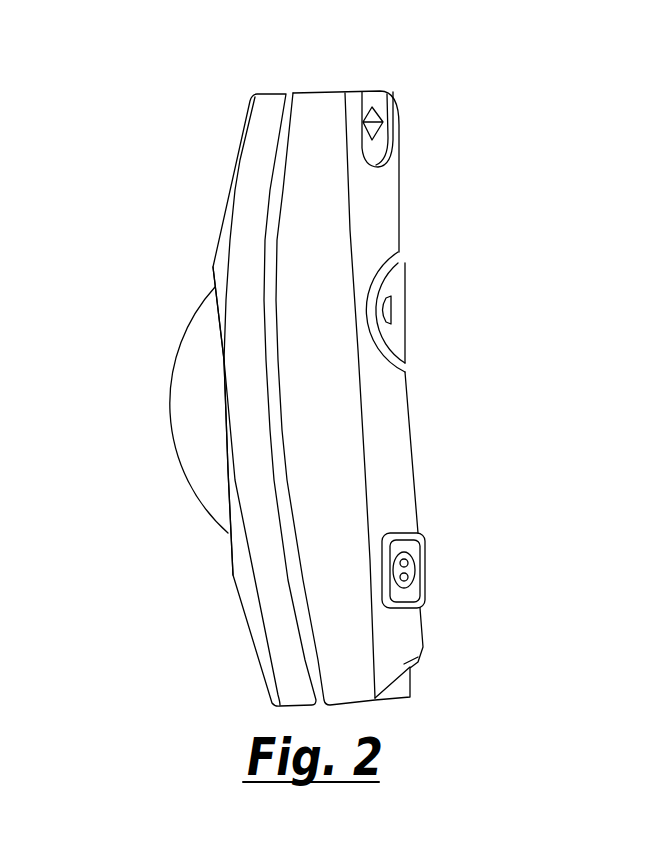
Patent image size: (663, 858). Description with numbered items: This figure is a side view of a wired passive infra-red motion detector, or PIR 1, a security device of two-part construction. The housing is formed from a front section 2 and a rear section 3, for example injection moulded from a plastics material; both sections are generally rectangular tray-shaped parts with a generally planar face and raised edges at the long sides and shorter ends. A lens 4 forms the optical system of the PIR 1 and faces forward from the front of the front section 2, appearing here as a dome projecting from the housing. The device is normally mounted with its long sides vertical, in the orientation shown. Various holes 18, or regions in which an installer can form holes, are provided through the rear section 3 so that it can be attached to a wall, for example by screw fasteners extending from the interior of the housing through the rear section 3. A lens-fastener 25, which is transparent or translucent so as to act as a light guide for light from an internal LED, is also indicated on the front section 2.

The passive infra-red motion detector 1 is at (506, 202).
The front section 2 is at (248, 215).
The rear section 3 is at (347, 448).
The lens 4 is at (192, 382).
The holes 18 is at (380, 120).
The lens-fastener 25 is at (230, 548).